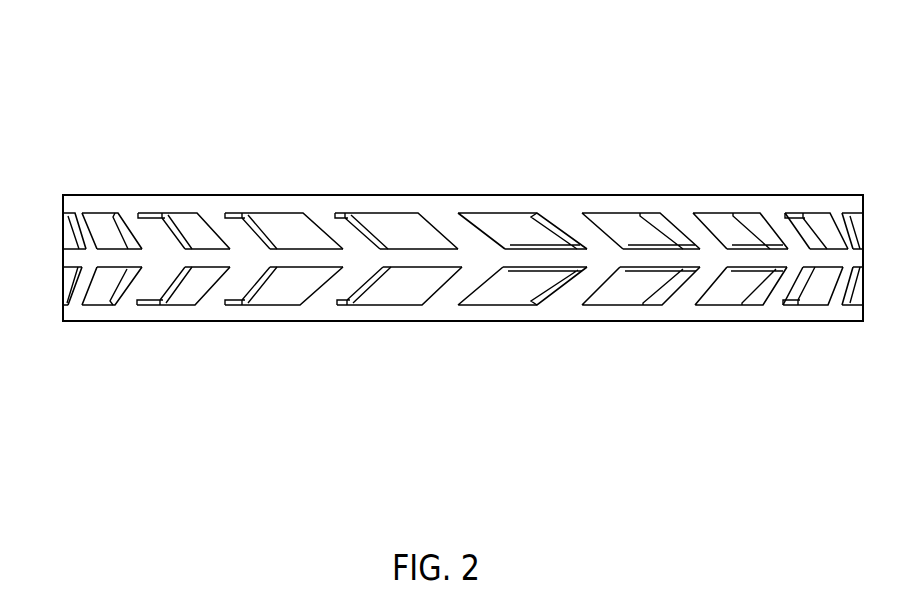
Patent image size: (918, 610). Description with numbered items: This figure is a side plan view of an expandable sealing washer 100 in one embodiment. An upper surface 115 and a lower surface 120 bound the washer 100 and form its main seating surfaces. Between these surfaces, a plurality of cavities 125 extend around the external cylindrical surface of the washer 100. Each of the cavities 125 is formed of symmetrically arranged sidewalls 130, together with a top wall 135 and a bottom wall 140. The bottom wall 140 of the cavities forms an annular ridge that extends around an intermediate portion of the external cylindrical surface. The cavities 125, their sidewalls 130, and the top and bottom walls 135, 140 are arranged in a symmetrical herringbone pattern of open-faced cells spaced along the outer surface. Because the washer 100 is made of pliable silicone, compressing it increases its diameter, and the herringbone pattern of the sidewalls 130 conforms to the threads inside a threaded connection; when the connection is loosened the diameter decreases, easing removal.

The washer 100 is at (660, 490).
The upper surface 115 is at (461, 186).
The lower surface 120 is at (447, 330).
The cavities 125 is at (195, 216).
The sidewalls 130 is at (139, 213).
The top wall 135 is at (173, 206).
The bottom wall 140 is at (183, 260).